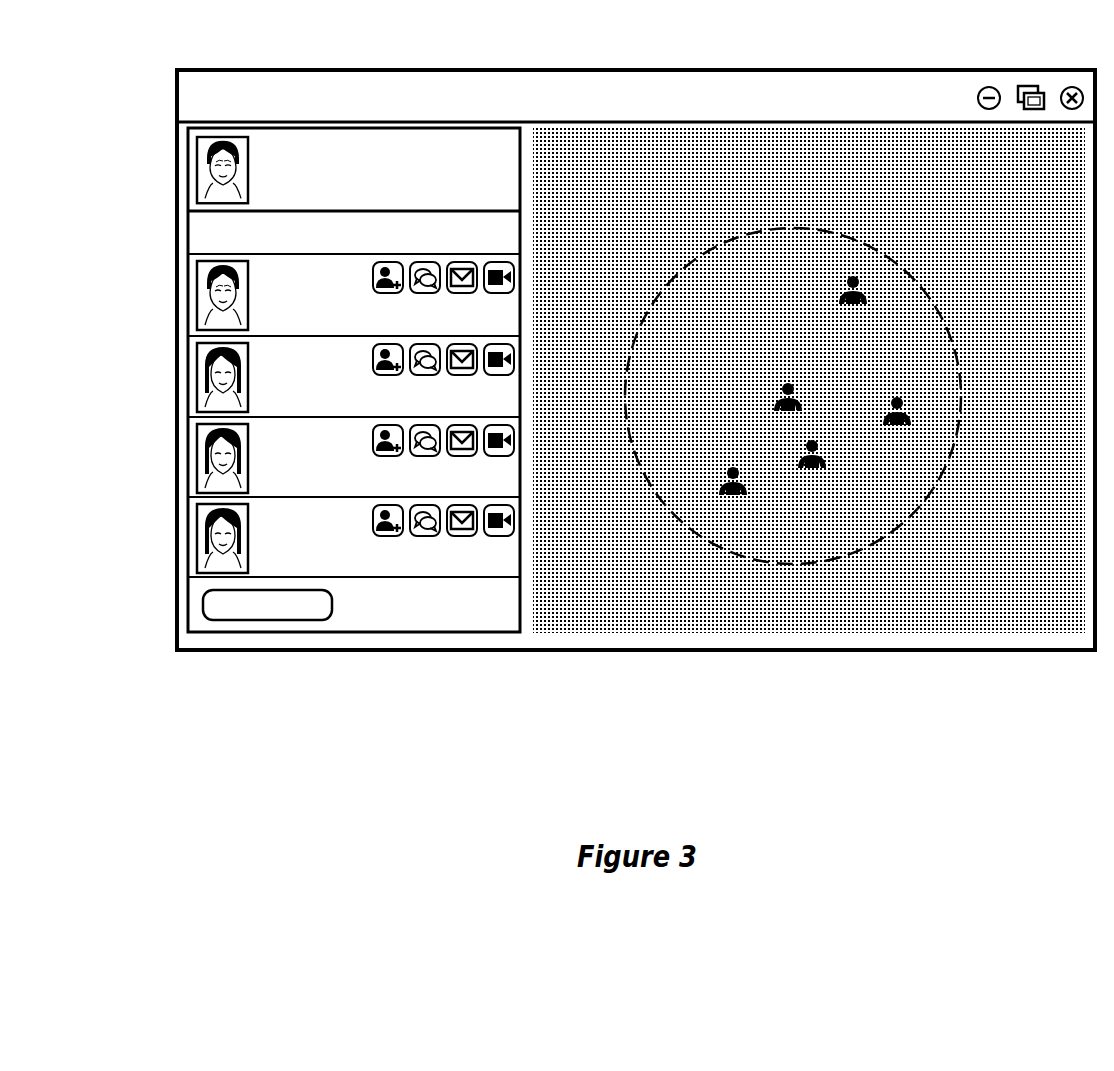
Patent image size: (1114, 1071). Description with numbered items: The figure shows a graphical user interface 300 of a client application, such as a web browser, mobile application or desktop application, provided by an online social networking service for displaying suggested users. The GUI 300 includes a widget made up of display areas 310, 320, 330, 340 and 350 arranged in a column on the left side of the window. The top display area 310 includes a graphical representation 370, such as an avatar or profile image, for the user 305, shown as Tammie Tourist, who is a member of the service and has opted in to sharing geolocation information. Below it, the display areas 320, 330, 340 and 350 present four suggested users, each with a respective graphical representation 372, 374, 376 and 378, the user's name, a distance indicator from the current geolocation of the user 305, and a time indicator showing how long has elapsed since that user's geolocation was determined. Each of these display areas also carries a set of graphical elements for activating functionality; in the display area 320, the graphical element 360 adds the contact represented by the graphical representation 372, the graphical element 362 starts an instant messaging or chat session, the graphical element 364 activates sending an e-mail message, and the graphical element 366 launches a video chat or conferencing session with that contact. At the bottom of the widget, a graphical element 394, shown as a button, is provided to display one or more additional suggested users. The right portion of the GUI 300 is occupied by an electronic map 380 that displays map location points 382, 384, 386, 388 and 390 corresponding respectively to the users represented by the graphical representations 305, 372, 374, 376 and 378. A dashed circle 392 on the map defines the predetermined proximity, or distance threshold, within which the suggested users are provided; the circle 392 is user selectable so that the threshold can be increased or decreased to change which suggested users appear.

The graphical user interface 300 is at (168, 101).
The user 305 is at (293, 407).
The display area 310 is at (288, 163).
The display area 320 is at (321, 281).
The display area 330 is at (321, 370).
The display area 340 is at (321, 450).
The display area 350 is at (321, 530).
The graphical element 360 is at (392, 262).
The graphical element 362 is at (428, 262).
The graphical element 364 is at (463, 262).
The graphical element 366 is at (498, 262).
The graphical representation 370 is at (197, 170).
The graphical representation 372 is at (197, 298).
The graphical representation 374 is at (197, 378).
The graphical representation 376 is at (197, 456).
The graphical representation 378 is at (197, 530).
The electronic map 380 is at (816, 419).
The map location point 382 is at (794, 386).
The map location point 384 is at (818, 443).
The map location point 386 is at (905, 400).
The map location point 388 is at (740, 470).
The map location point 390 is at (846, 283).
The circle 392 is at (718, 240).
The graphical element 394 is at (332, 615).